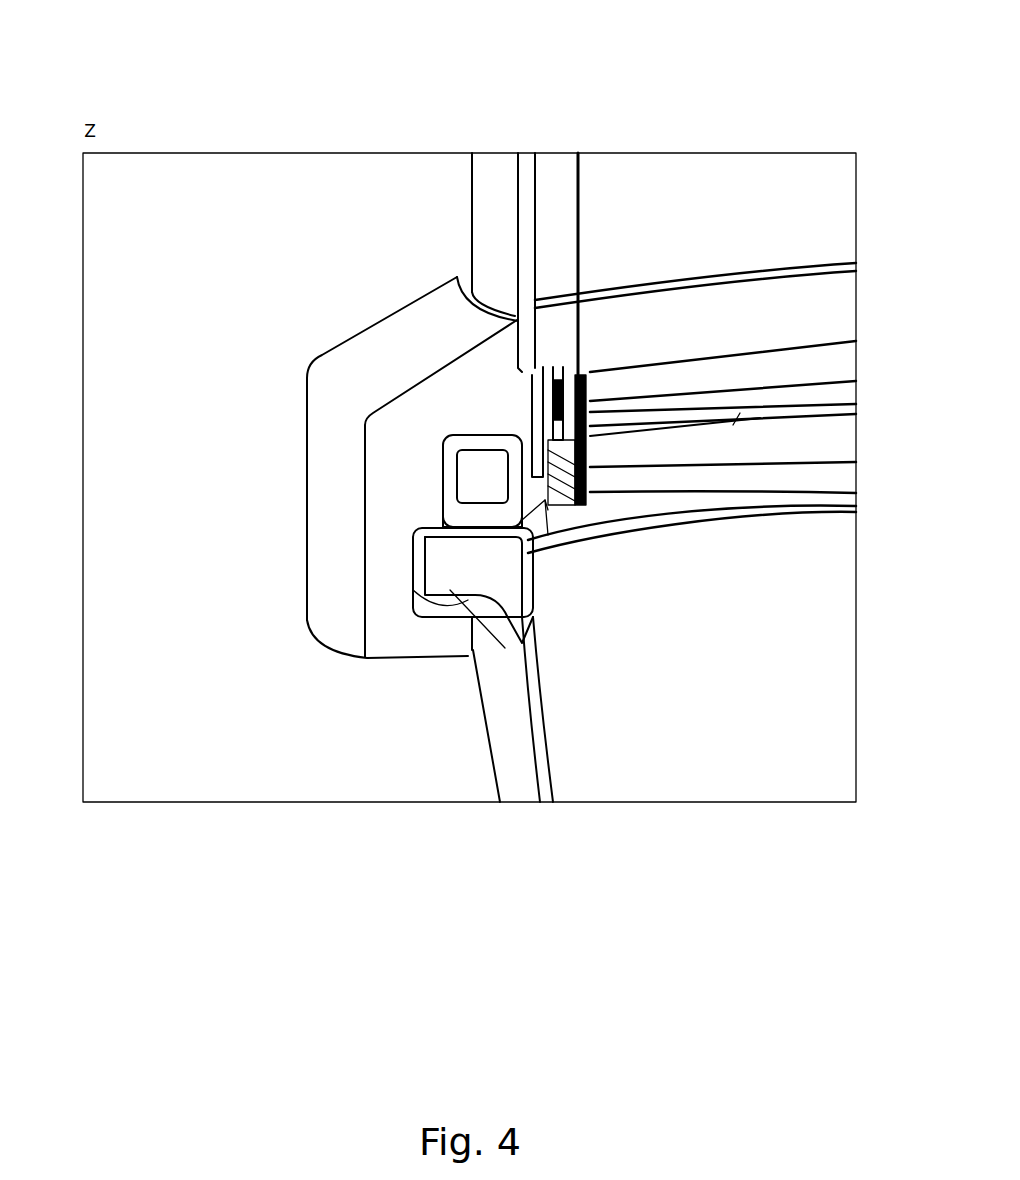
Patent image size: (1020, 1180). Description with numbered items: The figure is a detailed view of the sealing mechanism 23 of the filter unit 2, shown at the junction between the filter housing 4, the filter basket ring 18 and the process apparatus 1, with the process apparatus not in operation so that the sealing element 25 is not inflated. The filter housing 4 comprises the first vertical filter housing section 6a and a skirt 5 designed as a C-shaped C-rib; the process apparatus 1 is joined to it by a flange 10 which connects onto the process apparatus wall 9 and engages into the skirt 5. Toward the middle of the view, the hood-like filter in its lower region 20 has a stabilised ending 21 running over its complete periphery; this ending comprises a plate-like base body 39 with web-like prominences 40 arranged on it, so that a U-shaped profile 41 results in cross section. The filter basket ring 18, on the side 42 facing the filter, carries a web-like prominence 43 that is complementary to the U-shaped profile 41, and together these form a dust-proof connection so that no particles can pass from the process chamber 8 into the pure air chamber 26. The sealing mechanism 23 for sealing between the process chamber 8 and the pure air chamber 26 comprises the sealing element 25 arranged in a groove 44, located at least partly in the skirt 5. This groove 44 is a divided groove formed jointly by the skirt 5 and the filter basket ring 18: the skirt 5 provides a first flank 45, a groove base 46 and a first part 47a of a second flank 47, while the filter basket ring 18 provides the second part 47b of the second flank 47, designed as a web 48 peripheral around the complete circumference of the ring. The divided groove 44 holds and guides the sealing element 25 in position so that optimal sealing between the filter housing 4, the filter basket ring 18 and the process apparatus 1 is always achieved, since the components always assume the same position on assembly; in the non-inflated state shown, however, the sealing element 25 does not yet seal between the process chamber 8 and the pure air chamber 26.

The process apparatus 1 is at (474, 782).
The filter unit 2 is at (170, 22).
The filter housing 4 is at (420, 227).
The skirt 5 is at (337, 623).
The first vertical filter housing section 6a is at (490, 189).
The process chamber 8 is at (695, 425).
The process apparatus wall 9 is at (513, 790).
The flange 10 is at (503, 605).
The filter basket ring 18 is at (595, 474).
The lower region 20 is at (665, 455).
The stabilised ending 21 is at (603, 393).
The sealing mechanism 23 is at (391, 483).
The sealing element 25 is at (457, 518).
The pure air chamber 26 is at (541, 262).
The plate-like base body 39 is at (594, 459).
The web-like prominences 40 is at (573, 403).
The U-shaped profile 41 is at (590, 482).
The side 42 is at (577, 387).
The web-like prominence 43 is at (592, 467).
The groove 44 is at (427, 464).
The first flank 45 is at (435, 500).
The groove base 46 is at (481, 426).
The second flank 47 is at (737, 417).
The first part of the second flank 47a is at (541, 458).
The second part of the second flank 47b is at (533, 512).
The web 48 is at (543, 512).